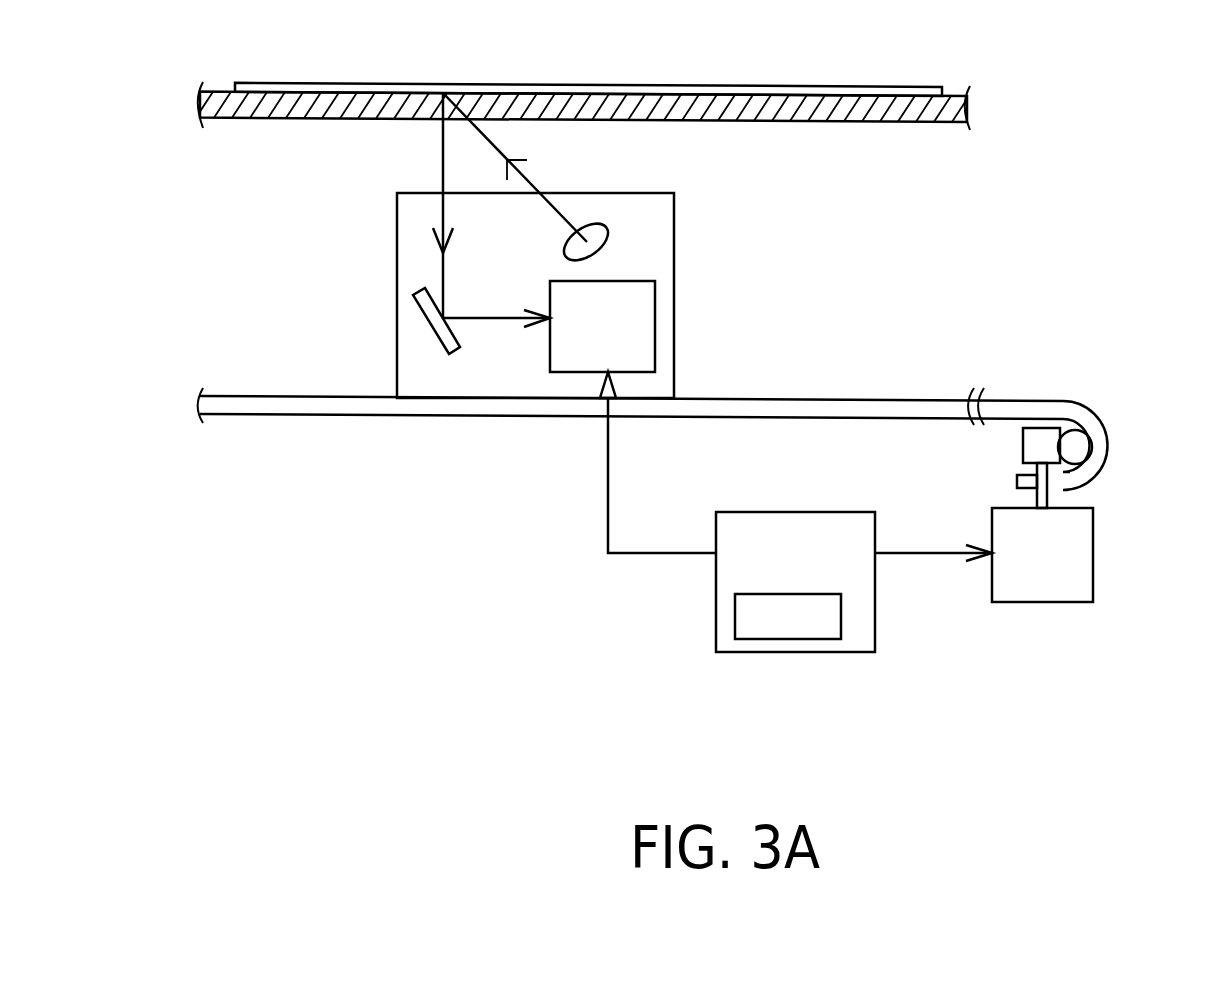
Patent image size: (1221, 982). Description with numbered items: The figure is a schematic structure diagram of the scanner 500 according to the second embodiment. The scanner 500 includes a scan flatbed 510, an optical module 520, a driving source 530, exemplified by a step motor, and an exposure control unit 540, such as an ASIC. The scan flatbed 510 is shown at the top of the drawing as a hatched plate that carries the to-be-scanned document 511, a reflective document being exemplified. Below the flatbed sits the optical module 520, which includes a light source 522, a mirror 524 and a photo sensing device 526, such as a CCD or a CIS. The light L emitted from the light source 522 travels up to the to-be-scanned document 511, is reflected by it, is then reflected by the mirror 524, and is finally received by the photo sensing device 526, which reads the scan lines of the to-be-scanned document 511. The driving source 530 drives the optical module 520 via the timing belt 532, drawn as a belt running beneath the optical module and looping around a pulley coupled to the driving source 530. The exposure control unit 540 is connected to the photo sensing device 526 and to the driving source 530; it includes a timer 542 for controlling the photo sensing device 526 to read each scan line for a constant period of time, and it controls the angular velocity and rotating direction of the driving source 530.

The scanner 500 is at (492, 640).
The scan flatbed 510 is at (937, 122).
The to-be-scanned document 511 is at (823, 84).
The optical module 520 is at (674, 252).
The light source 522 is at (598, 224).
The mirror 524 is at (435, 322).
The photo sensing device 526 is at (655, 318).
The driving source 530 is at (1093, 558).
The timing belt 532 is at (1075, 410).
The exposure control unit 540 is at (793, 512).
The timer 542 is at (786, 640).